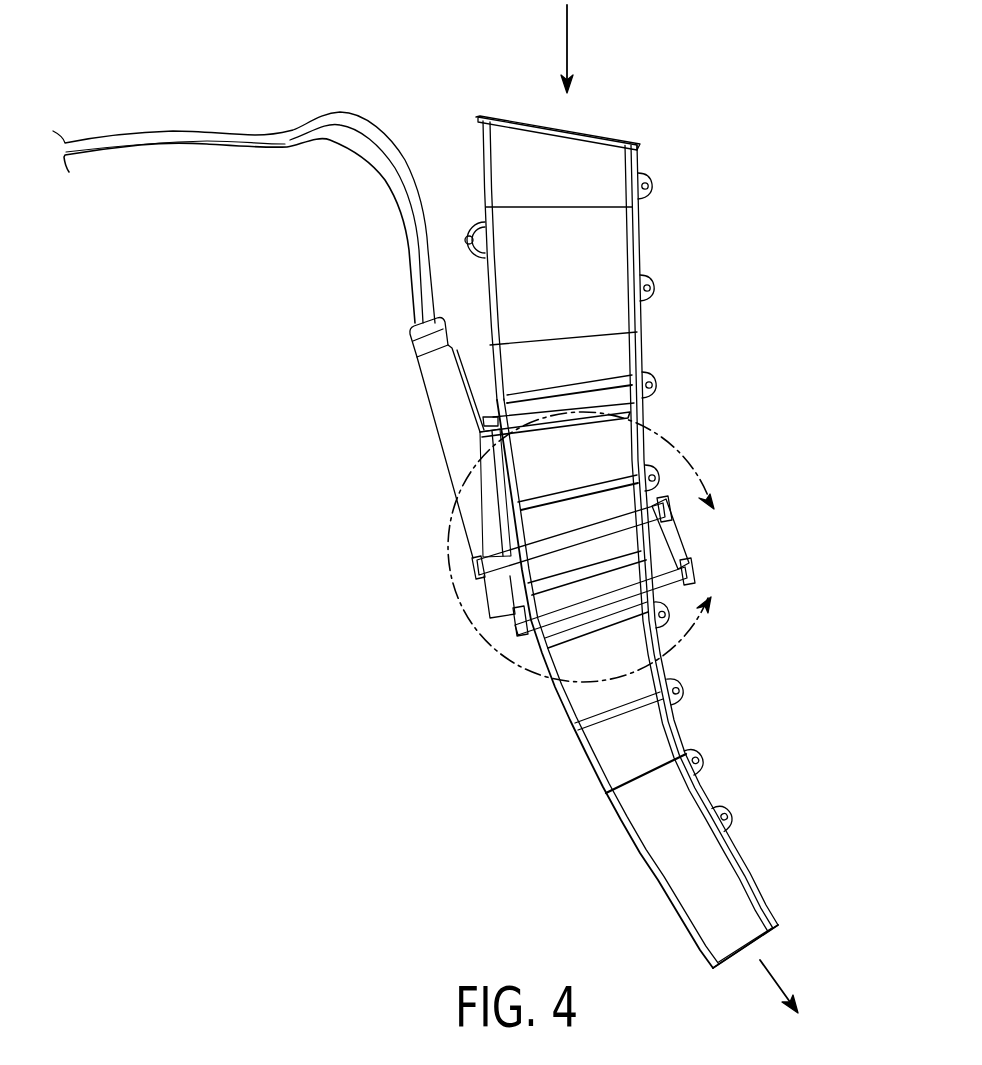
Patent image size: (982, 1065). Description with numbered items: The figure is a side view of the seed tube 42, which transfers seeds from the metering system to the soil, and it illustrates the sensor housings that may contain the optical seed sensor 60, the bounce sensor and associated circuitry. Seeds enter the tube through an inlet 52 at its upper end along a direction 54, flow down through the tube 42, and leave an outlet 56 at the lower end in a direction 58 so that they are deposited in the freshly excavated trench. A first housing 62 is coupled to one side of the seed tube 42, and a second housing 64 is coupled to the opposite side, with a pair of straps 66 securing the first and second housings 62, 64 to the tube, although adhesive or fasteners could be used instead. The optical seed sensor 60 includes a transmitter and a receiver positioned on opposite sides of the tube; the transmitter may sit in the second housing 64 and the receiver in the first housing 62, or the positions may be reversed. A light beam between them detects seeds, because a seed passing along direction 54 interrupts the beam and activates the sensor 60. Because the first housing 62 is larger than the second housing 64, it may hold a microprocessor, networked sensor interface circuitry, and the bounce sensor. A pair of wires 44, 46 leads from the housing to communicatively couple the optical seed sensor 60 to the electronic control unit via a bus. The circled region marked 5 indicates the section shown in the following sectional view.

The seed tube 42 is at (637, 240).
The first wire 44 is at (350, 143).
The second wire 46 is at (368, 128).
The inlet 52 is at (486, 116).
The direction 54 is at (567, 40).
The outlet 56 is at (779, 926).
The direction 58 is at (775, 983).
The optical seed sensor 60 is at (443, 658).
The first housing 62 is at (445, 403).
The second housing 64 is at (660, 547).
The straps 66 is at (525, 615).
The section line 5- 5 is at (591, 547).